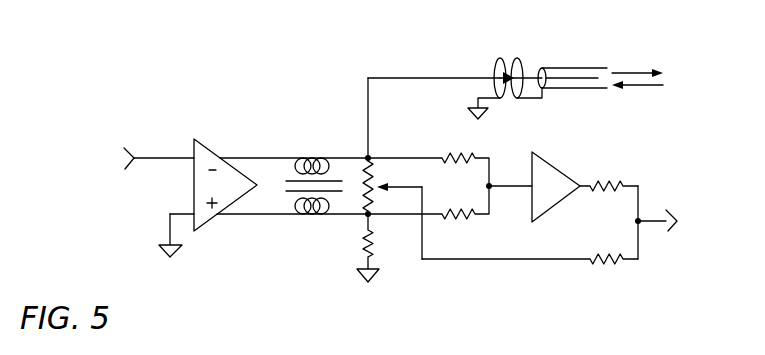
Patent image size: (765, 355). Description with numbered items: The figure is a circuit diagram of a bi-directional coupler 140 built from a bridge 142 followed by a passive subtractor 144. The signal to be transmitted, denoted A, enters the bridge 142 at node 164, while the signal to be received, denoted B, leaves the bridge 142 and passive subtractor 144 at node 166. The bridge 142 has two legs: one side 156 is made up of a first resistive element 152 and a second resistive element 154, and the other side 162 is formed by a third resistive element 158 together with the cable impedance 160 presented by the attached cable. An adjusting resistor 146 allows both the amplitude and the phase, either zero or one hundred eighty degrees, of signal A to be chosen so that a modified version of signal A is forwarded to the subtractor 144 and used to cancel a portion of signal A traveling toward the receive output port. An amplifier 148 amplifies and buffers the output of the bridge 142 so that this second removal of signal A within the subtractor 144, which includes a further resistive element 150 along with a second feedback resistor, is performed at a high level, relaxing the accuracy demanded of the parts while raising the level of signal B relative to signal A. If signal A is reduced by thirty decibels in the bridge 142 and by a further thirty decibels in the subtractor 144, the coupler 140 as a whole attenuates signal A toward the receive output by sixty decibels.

The bi-directional coupler 140 is at (135, 82).
The bridge 142 is at (397, 60).
The passive subtractor 144 is at (674, 170).
The adjusting resistor 146 is at (372, 197).
The amplifier 148 is at (568, 177).
The resistor R4 150 is at (585, 190).
The resistive element 152 is at (472, 155).
The resistive element 154 is at (473, 218).
The side of the bridge 156 is at (495, 281).
The resistive element 158 is at (363, 259).
The cable impedance 160 is at (602, 65).
The other side of the bridge 162 is at (346, 120).
The node 164 is at (128, 172).
The node 166 is at (670, 231).